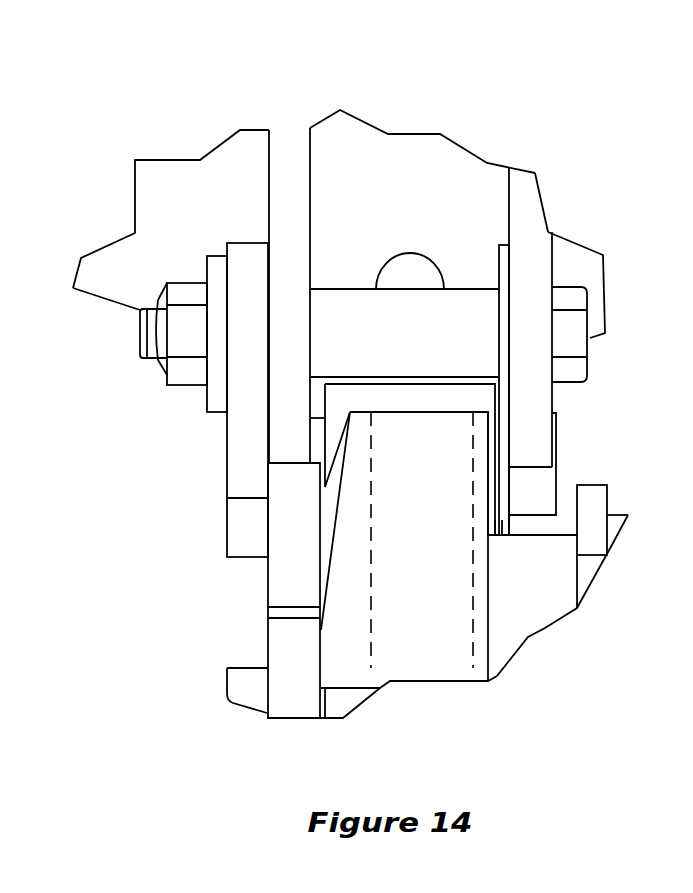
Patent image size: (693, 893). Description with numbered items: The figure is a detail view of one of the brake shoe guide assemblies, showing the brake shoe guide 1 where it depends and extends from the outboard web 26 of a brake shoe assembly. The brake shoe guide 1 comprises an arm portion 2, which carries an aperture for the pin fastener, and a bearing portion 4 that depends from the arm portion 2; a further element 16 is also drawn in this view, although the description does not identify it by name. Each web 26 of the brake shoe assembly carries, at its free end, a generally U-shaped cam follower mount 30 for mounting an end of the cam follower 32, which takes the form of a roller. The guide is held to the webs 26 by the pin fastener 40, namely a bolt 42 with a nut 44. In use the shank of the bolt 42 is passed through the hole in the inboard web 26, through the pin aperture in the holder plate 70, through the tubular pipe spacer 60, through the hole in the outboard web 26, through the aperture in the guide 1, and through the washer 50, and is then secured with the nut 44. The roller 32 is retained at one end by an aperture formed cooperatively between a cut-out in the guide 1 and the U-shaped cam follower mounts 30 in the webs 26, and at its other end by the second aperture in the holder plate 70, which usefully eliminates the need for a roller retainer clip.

The brake shoe guide 1 is at (245, 233).
The arm portion 2 is at (223, 525).
The bearing portion 4 is at (265, 583).
The insert element 16 is at (428, 648).
The web 26 is at (290, 160).
The cam follower mount 30 is at (290, 438).
The cam follower 32 is at (538, 485).
The pin fastener 40 is at (592, 348).
The bolt 42 is at (577, 328).
The nut 44 is at (172, 372).
The washer 50 is at (213, 400).
The tubular pipe spacer 60 is at (407, 315).
The holder plate 70 is at (505, 537).